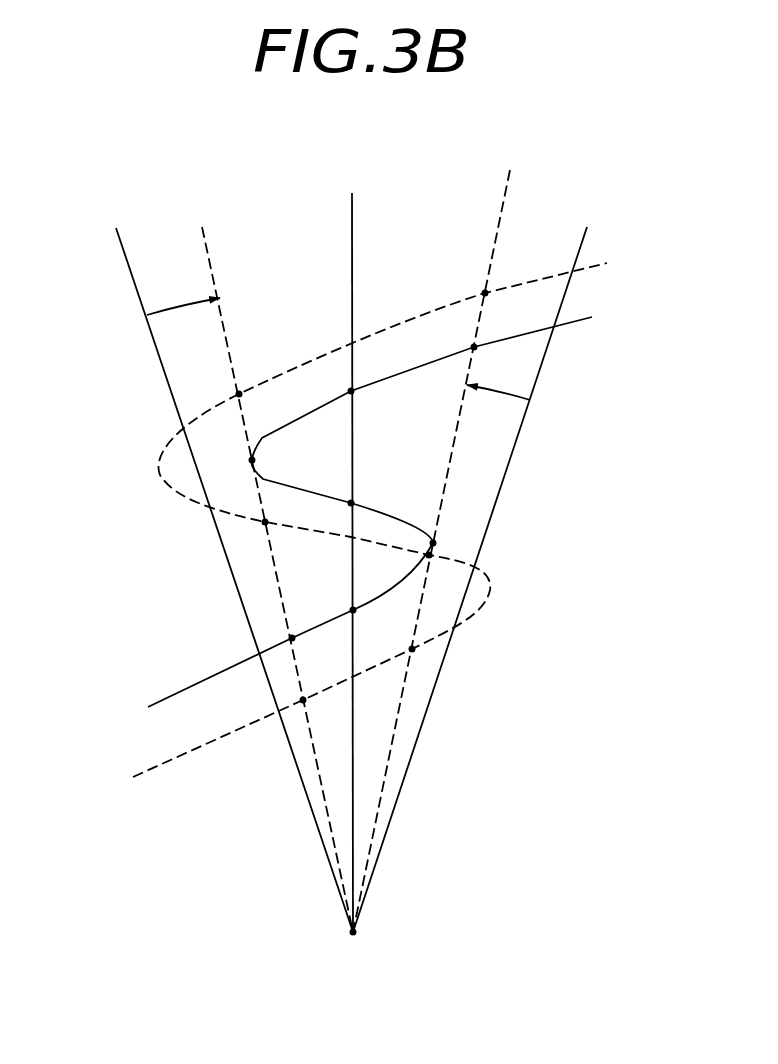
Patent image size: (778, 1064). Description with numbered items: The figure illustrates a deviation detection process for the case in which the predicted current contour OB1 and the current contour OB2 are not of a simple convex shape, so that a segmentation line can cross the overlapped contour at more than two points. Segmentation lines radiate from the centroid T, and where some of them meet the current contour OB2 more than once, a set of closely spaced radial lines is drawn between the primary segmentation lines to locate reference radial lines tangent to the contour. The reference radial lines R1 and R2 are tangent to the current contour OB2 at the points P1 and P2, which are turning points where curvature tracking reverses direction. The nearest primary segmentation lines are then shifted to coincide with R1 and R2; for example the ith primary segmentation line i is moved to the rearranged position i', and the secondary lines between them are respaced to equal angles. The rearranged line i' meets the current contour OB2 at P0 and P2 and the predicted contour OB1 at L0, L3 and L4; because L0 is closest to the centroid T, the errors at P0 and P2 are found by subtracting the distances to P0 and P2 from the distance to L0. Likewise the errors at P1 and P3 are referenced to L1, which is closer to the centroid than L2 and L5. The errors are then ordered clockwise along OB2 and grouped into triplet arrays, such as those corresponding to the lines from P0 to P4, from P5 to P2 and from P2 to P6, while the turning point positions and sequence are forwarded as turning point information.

The centroid T is at (352, 956).
The ith primary segmentation line i is at (229, 560).
The rearranged i'th primary segmentation line i' is at (275, 560).
The reference radial line R1 is at (202, 231).
The reference radial line R2 is at (498, 392).
The predicted current contour OB1 is at (406, 507).
The current contour OB2 is at (406, 500).
The intersection point P0 is at (318, 652).
The turning point P1 is at (456, 526).
The turning point P2 is at (279, 457).
The intersection point P3 is at (454, 330).
The intersection point P4 is at (334, 600).
The intersection point P5 is at (372, 488).
The intersection point P6 is at (372, 407).
The intersection point L0 is at (329, 714).
The intersection point L1 is at (392, 636).
The intersection point L2 is at (445, 577).
The intersection point L3 is at (292, 547).
The intersection point L4 is at (258, 369).
The intersection point L5 is at (464, 279).